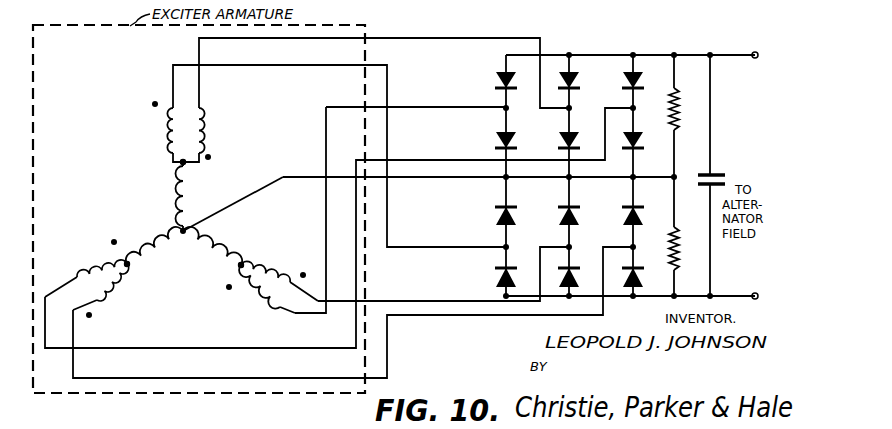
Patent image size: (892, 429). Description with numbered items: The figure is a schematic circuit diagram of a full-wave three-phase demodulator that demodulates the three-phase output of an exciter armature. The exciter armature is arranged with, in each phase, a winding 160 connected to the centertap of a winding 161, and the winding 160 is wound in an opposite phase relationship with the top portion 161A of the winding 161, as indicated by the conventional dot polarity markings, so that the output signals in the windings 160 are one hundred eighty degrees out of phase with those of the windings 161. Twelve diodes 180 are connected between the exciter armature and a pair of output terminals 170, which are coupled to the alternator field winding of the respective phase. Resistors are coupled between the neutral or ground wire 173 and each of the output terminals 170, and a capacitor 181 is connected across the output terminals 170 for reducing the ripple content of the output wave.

The winding 160 is at (206, 120).
The winding 161 is at (178, 164).
The top portion of the winding 161A is at (166, 120).
The output terminals 170 is at (753, 60).
The neutral or ground wire 173 is at (452, 178).
The diodes 180 is at (497, 80).
The capacitor 181 is at (717, 173).